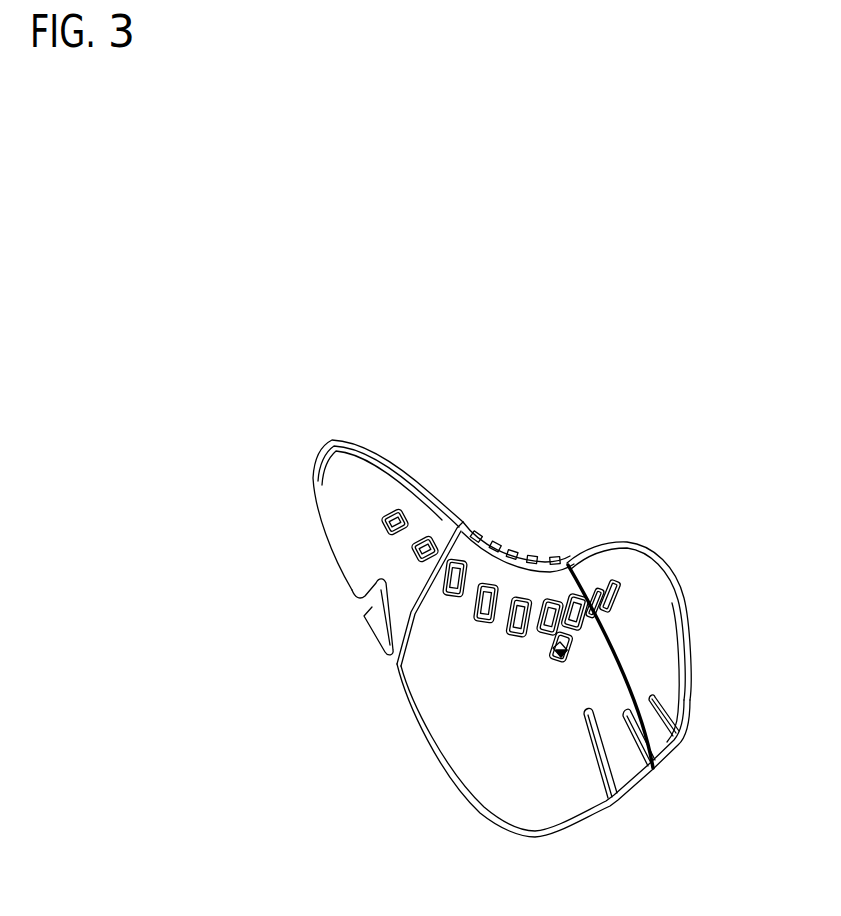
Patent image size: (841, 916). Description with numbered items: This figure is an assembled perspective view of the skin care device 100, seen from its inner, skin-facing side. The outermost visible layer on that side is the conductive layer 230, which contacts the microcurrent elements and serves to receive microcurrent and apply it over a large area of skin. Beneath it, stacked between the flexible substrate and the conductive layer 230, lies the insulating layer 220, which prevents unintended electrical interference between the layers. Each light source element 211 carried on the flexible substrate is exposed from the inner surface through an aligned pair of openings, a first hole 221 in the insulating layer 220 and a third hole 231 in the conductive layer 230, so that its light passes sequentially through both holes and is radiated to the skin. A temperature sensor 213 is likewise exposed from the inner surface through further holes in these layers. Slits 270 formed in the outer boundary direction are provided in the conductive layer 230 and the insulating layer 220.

The skin care device 100 is at (201, 250).
The light source element 211 is at (615, 593).
The temperature sensor 213 is at (567, 650).
The insulating layer 220 is at (640, 795).
The first hole 221 is at (487, 584).
The third hole 231 is at (509, 535).
The conductive layer 230 is at (380, 627).
The slit 270 is at (361, 603).